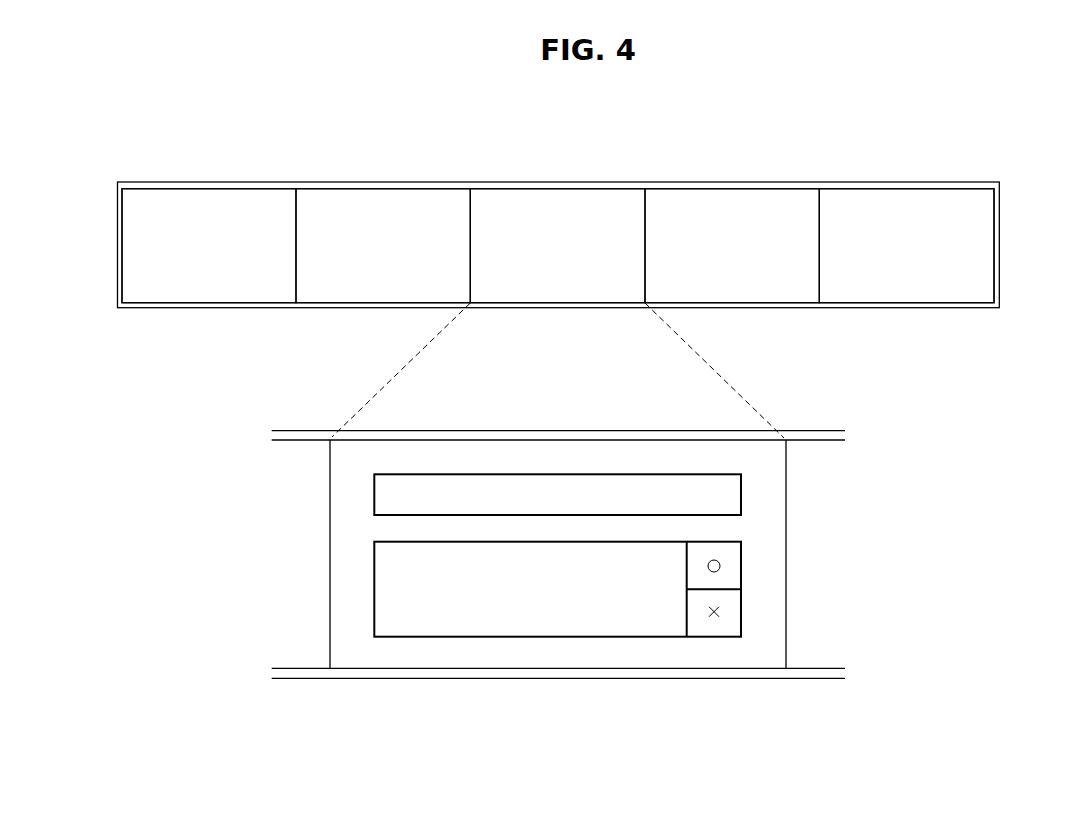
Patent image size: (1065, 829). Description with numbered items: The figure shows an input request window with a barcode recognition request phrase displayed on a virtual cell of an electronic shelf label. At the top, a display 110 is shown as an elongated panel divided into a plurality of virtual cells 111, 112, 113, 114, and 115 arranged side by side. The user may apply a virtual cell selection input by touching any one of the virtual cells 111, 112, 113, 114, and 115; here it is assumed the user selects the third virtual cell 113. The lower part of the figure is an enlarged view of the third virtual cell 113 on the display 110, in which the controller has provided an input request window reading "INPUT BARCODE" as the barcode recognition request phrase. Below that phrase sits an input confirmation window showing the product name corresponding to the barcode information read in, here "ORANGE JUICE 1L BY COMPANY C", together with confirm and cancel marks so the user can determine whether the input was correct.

The display 110 is at (999, 246).
The first virtual cell 111 is at (254, 199).
The second virtual cell 112 is at (428, 199).
The third virtual cell 113 is at (602, 199).
The fourth virtual cell 114 is at (776, 199).
The fifth virtual cell 115 is at (950, 199).